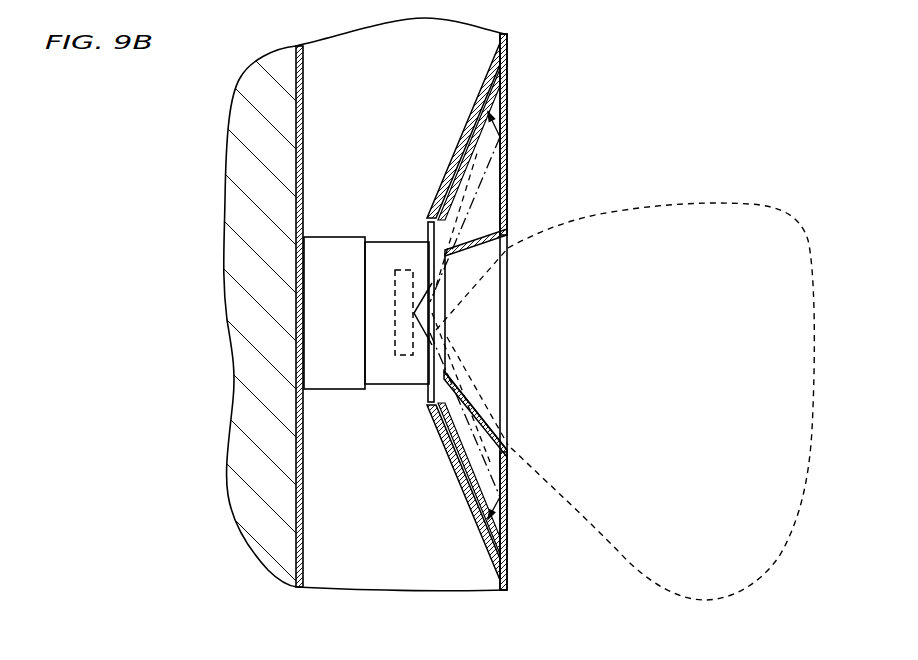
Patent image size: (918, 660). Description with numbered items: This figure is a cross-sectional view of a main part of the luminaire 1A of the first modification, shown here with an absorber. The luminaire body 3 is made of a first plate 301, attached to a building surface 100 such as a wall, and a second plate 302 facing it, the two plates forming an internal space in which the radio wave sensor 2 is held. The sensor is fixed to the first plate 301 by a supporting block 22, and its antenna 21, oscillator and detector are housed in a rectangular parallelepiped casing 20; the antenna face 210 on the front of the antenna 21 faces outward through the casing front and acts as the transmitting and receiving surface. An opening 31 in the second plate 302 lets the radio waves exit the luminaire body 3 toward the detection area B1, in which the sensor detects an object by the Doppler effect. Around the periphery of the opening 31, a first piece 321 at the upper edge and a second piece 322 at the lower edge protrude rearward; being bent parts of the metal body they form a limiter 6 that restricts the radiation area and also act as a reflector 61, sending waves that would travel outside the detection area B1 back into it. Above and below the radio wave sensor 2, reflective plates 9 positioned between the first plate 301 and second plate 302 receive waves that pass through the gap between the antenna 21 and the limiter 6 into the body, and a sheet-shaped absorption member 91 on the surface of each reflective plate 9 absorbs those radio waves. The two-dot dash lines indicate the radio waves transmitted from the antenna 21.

The luminaire 1A is at (473, 304).
The radio wave sensor 2 is at (408, 237).
The luminaire body 3 is at (510, 53).
The limiter 6 is at (466, 387).
The reflective plate 9 is at (461, 136).
The casing 20 is at (372, 250).
The antenna 21 is at (395, 343).
The supporting block 22 is at (325, 245).
The opening 31 is at (511, 448).
The reflector 61 is at (522, 343).
The absorption member 91 is at (462, 163).
The building surface 100 is at (247, 527).
The antenna face 210 is at (419, 357).
The first plate 301 is at (304, 93).
The second plate 302 is at (509, 561).
The first piece 321 is at (472, 253).
The second piece 322 is at (482, 420).
The detection area B1 is at (759, 204).